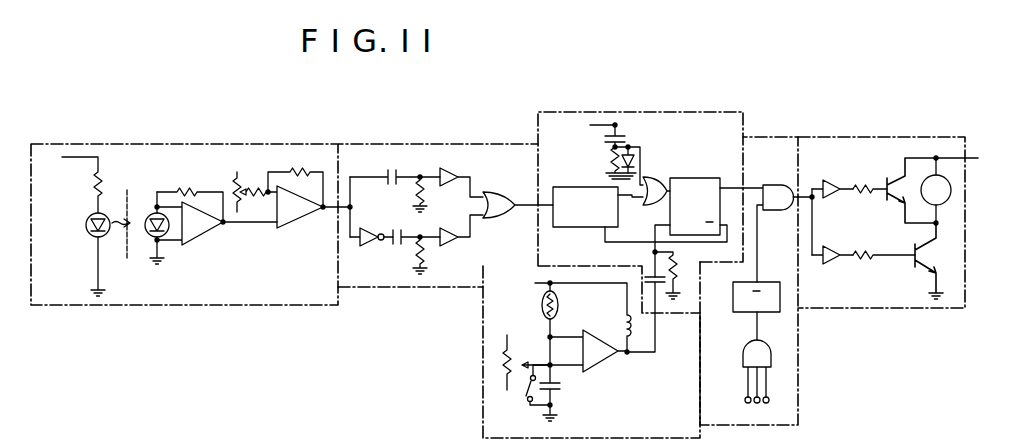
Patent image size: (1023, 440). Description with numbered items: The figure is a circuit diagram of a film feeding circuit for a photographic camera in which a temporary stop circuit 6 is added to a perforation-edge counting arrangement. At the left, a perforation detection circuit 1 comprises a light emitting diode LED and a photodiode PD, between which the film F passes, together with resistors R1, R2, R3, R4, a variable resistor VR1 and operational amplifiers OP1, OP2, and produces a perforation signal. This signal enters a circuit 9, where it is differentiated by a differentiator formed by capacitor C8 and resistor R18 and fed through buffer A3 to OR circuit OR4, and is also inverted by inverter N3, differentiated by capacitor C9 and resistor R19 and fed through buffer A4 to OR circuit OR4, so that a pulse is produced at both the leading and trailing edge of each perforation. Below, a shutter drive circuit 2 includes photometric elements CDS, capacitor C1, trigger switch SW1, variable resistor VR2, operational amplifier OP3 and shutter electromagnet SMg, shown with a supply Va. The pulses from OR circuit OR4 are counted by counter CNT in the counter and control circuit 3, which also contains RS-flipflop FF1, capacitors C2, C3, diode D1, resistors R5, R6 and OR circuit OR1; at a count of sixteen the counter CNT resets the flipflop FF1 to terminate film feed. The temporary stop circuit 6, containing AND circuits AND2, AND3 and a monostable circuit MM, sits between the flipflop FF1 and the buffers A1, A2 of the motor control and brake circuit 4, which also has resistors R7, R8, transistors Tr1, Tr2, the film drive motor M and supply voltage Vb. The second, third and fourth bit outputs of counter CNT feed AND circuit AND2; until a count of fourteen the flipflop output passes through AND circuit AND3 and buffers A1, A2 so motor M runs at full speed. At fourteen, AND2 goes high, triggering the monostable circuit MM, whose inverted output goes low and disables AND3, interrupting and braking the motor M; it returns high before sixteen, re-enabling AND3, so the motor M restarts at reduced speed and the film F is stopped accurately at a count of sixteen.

The perforation detection circuit 1 is at (247, 144).
The circuit 9 is at (478, 144).
The counter and control circuit 3 is at (735, 112).
The temporary stop circuit 6 is at (776, 137).
The motor control and brake circuit 4 is at (905, 137).
The shutter drive circuit 2 is at (483, 360).
The resistor R1 is at (92, 180).
The light emitting diode LED is at (86, 237).
The film F is at (130, 192).
The photodiode PD is at (150, 250).
The resistor R2 is at (184, 188).
The operational amplifier OP1 is at (210, 233).
The variable resistor VR1 is at (237, 178).
The resistor R3 is at (258, 186).
The resistor R4 is at (292, 171).
The operational amplifier OP2 is at (292, 226).
The capacitor C8 is at (398, 166).
The buffer A3 is at (454, 177).
The resistor R18 is at (416, 190).
The buffer A4 is at (461, 223).
The inverter N3 is at (372, 244).
The capacitor C9 is at (398, 244).
The resistor R19 is at (428, 256).
The OR circuit OR4 is at (509, 220).
The counter CNT is at (594, 222).
The supply voltage Va is at (565, 205).
The capacitor C2 is at (627, 138).
The resistor R5 is at (612, 156).
The diode D1 is at (637, 158).
The OR circuit OR1 is at (664, 180).
The RS-flipflop FF1 is at (716, 178).
The capacitor C3 is at (653, 262).
The resistor R6 is at (680, 272).
The AND circuit AND3 is at (774, 185).
The monostable circuit MM is at (742, 314).
The AND circuit AND2 is at (745, 354).
The buffer A1 is at (831, 181).
The resistor R7 is at (862, 183).
The transistor Tr1 is at (886, 203).
The film drive motor M is at (936, 190).
The supply voltage Vb is at (993, 160).
The buffer A2 is at (838, 243).
The resistor R8 is at (868, 252).
The transistor Tr2 is at (917, 275).
The photometric elements CDS is at (558, 303).
The shutter electromagnet SMg is at (622, 322).
The variable resistor VR2 is at (508, 348).
The trigger switch SW1 is at (522, 400).
The capacitor C1 is at (562, 389).
The operational amplifier OP3 is at (606, 366).